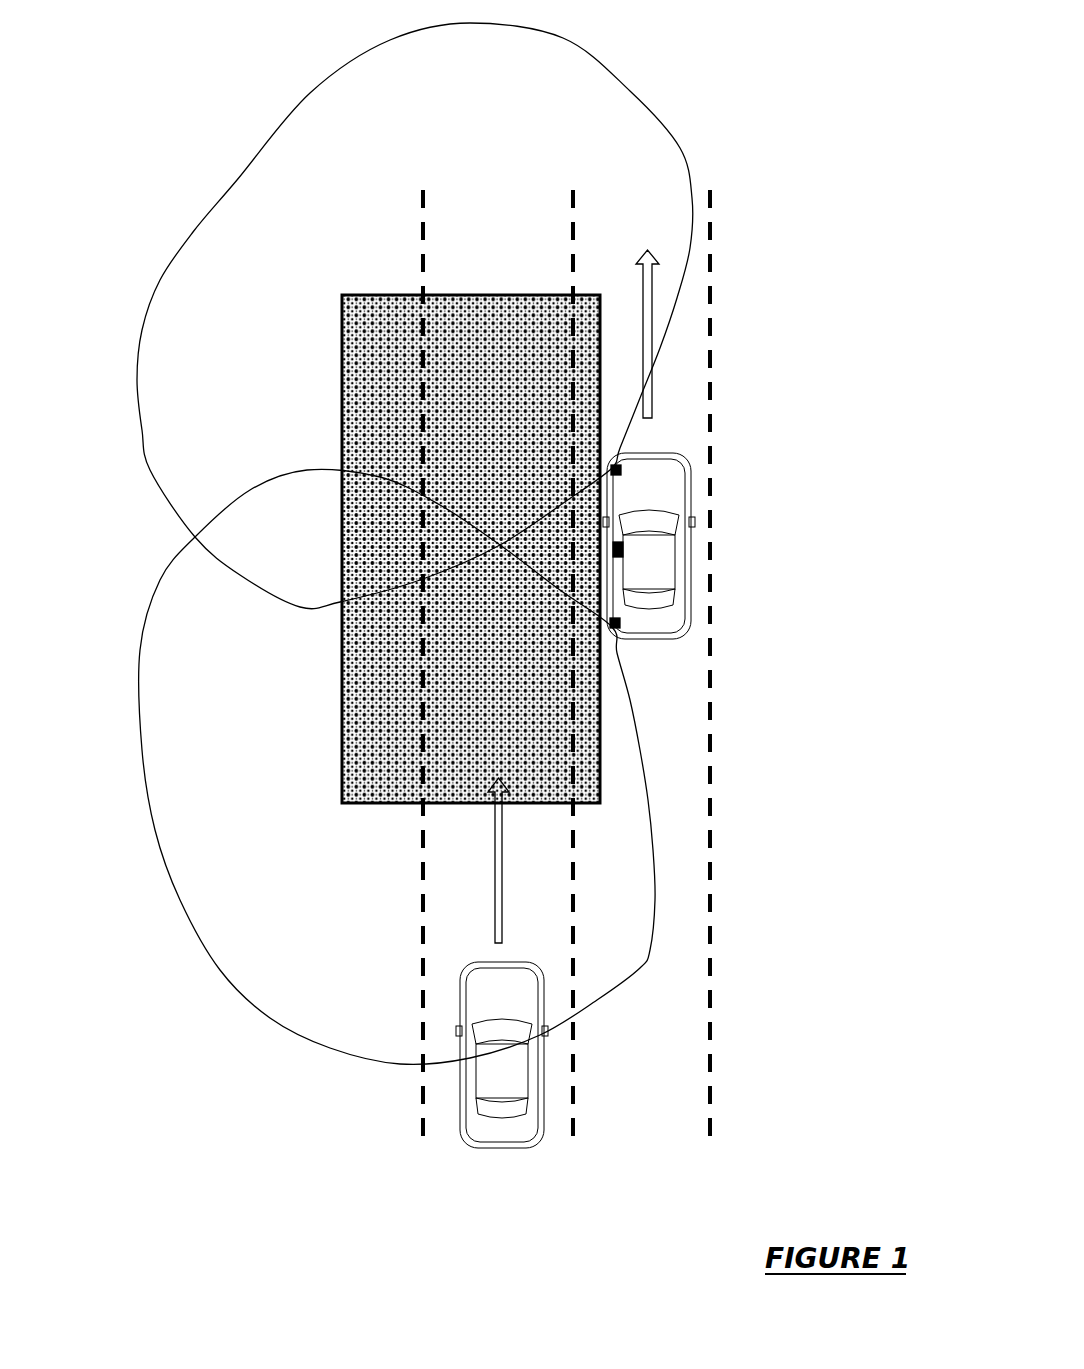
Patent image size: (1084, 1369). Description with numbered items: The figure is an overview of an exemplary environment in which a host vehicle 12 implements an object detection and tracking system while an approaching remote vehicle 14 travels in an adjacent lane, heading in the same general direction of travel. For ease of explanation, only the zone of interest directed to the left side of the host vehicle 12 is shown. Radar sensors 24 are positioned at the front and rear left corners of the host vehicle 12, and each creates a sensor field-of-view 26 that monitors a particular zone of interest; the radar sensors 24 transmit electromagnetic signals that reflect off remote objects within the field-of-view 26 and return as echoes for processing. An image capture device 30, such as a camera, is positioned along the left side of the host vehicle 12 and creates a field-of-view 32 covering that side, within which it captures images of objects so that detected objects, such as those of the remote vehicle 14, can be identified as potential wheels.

The host vehicle 12 is at (688, 502).
The remote vehicle 14 is at (487, 1148).
The radar sensors 24 is at (622, 468).
The sensor field-of-view 26 is at (193, 232).
The image capture device 30 is at (625, 548).
The field-of-view 32 is at (342, 668).